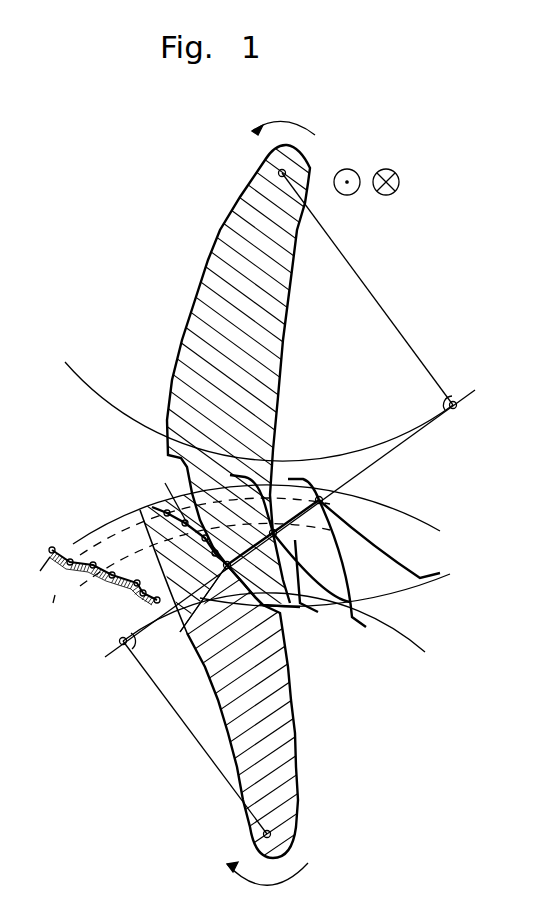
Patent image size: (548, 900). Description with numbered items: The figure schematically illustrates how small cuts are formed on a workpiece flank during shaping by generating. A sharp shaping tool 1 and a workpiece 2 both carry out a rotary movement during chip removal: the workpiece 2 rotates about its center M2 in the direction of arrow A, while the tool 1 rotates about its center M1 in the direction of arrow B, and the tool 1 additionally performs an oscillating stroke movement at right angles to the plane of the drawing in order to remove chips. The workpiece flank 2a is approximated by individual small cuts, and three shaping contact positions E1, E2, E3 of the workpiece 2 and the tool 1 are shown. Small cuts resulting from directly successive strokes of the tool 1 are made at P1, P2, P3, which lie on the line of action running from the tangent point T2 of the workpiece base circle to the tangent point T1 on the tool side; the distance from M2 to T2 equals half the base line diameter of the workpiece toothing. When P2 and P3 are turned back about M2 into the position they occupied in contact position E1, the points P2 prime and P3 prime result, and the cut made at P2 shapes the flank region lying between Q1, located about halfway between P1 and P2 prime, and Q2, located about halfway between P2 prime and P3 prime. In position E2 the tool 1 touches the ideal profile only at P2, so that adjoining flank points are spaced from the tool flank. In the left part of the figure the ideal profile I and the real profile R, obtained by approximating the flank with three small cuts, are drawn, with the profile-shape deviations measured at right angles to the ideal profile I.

The shaping tool 1 is at (212, 270).
The workpiece 2 is at (283, 757).
The workpiece flank 2a is at (160, 507).
The axis of rotation of the tool M1 is at (286, 170).
The axis of rotation of the workpiece M2 is at (272, 834).
The base circle tangent point of the tool T1 is at (466, 420).
The base circle tangent point of the workpiece T2 is at (115, 635).
The first small cut P1 is at (233, 565).
The second small cut P2 is at (280, 532).
The third small cut P3 is at (325, 503).
The first shaping contact position E1 is at (268, 610).
The second shaping contact position E2 is at (303, 567).
The third shaping contact position E3 is at (347, 537).
The first boundary point of the cut region Q1 is at (194, 616).
The second boundary point of the cut region Q2 is at (165, 491).
The real profile R is at (55, 595).
The ideal profile I is at (53, 611).
The direction of rotation of the workpiece A is at (255, 866).
The direction of rotation of the tool B is at (272, 134).